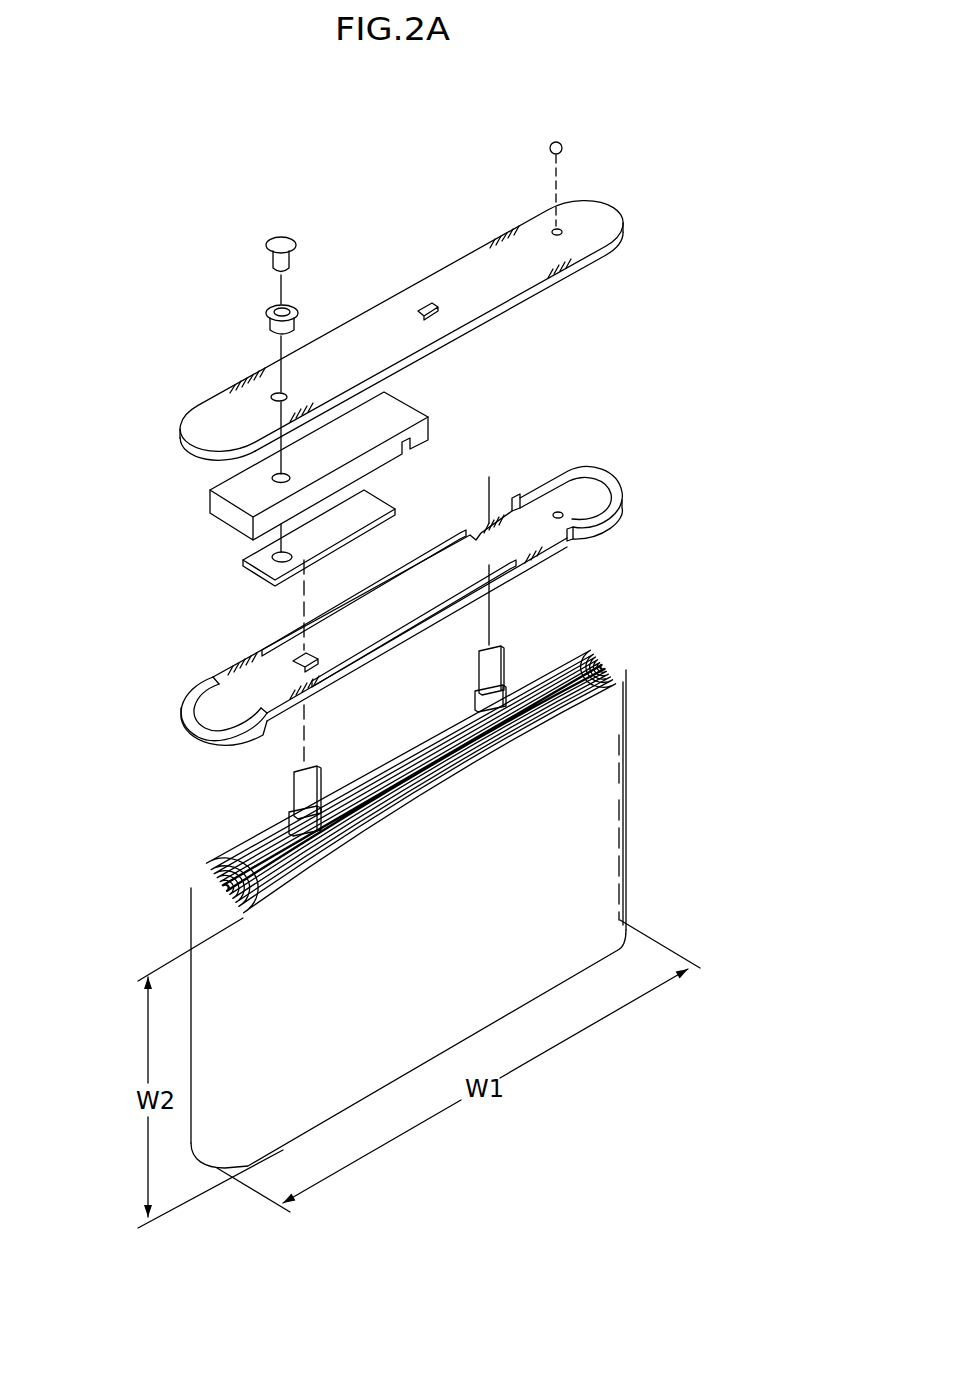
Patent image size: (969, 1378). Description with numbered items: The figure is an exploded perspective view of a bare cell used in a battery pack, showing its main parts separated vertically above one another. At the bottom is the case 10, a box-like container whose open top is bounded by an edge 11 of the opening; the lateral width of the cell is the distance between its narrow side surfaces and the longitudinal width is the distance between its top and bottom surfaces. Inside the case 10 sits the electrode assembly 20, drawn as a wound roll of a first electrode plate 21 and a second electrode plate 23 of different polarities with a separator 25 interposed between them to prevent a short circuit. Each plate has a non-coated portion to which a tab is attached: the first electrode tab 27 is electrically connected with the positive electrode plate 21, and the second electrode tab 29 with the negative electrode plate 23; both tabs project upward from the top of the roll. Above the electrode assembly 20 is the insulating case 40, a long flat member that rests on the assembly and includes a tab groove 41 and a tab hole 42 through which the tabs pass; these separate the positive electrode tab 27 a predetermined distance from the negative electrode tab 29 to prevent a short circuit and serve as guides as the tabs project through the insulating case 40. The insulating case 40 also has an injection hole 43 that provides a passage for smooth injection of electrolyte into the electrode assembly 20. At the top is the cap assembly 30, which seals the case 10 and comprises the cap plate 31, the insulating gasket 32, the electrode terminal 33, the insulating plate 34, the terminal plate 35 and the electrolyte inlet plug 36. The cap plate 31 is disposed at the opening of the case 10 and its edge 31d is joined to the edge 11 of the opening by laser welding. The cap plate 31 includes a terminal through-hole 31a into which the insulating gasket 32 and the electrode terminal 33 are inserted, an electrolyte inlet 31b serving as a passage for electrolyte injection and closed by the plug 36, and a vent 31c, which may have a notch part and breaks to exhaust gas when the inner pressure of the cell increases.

The case 10 is at (632, 781).
The edge of the opening of the case 11 is at (191, 889).
The electrode assembly 20 is at (690, 640).
The first electrode plate 21 is at (626, 666).
The second electrode plate 23 is at (597, 657).
The separator 25 is at (612, 663).
The first electrode tab 27 is at (477, 677).
The second electrode tab 29 is at (292, 795).
The cap assembly 30 is at (100, 316).
The cap plate 31 is at (350, 308).
The terminal through-hole 31a is at (279, 390).
The electrolyte inlet 31b is at (553, 232).
The vent 31c is at (425, 302).
The edge of the cap plate 31d is at (185, 427).
The insulating gasket 32 is at (263, 316).
The electrode terminal 33 is at (268, 259).
The insulating plate 34 is at (214, 505).
The terminal plate 35 is at (242, 566).
The electrolyte inlet plug 36 is at (563, 150).
The insulating case 40 is at (183, 697).
The tab groove 41 is at (479, 534).
The tab hole 42 is at (296, 656).
The injection hole 43 is at (558, 512).